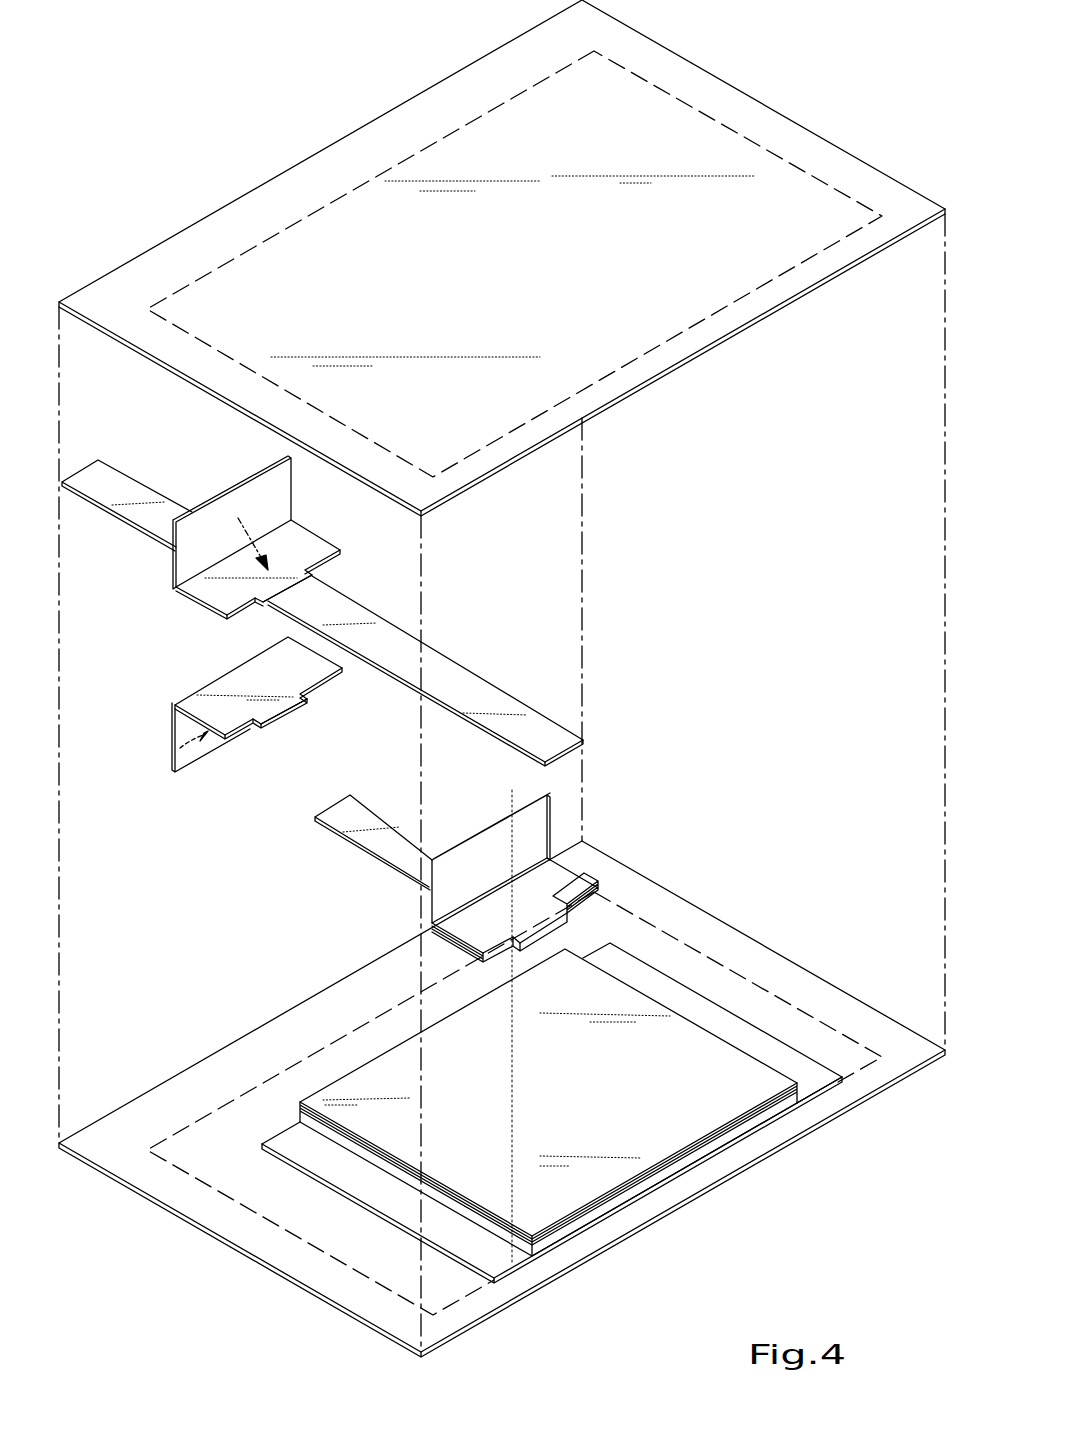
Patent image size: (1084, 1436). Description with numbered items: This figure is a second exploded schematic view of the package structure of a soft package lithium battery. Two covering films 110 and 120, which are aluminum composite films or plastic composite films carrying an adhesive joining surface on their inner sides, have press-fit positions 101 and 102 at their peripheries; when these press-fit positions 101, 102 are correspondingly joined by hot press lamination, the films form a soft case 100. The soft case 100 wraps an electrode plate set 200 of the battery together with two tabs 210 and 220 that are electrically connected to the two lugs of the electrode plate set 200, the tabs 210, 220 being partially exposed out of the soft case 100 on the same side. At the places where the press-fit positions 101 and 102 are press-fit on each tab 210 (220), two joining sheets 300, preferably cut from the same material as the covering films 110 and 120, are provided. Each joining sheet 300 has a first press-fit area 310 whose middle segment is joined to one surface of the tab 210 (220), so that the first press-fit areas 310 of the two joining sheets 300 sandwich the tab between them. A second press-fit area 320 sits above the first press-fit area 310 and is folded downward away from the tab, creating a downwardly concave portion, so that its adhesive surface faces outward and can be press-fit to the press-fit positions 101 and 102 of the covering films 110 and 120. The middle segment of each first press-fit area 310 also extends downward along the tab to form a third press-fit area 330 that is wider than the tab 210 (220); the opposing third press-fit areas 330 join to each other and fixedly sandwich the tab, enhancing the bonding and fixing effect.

The soft case 100 is at (827, 510).
The press-fit position 101 is at (202, 1085).
The press-fit position 102 is at (222, 239).
The covering film 110 is at (777, 1011).
The covering film 120 is at (702, 300).
The electrode plate set 200 is at (590, 1177).
The tab 210 is at (457, 693).
The tab 220 is at (811, 1078).
The joining sheet 300 is at (128, 580).
The first press-fit area 310 is at (217, 583).
The second press-fit area 320 is at (185, 552).
The third press-fit area 330 is at (262, 604).